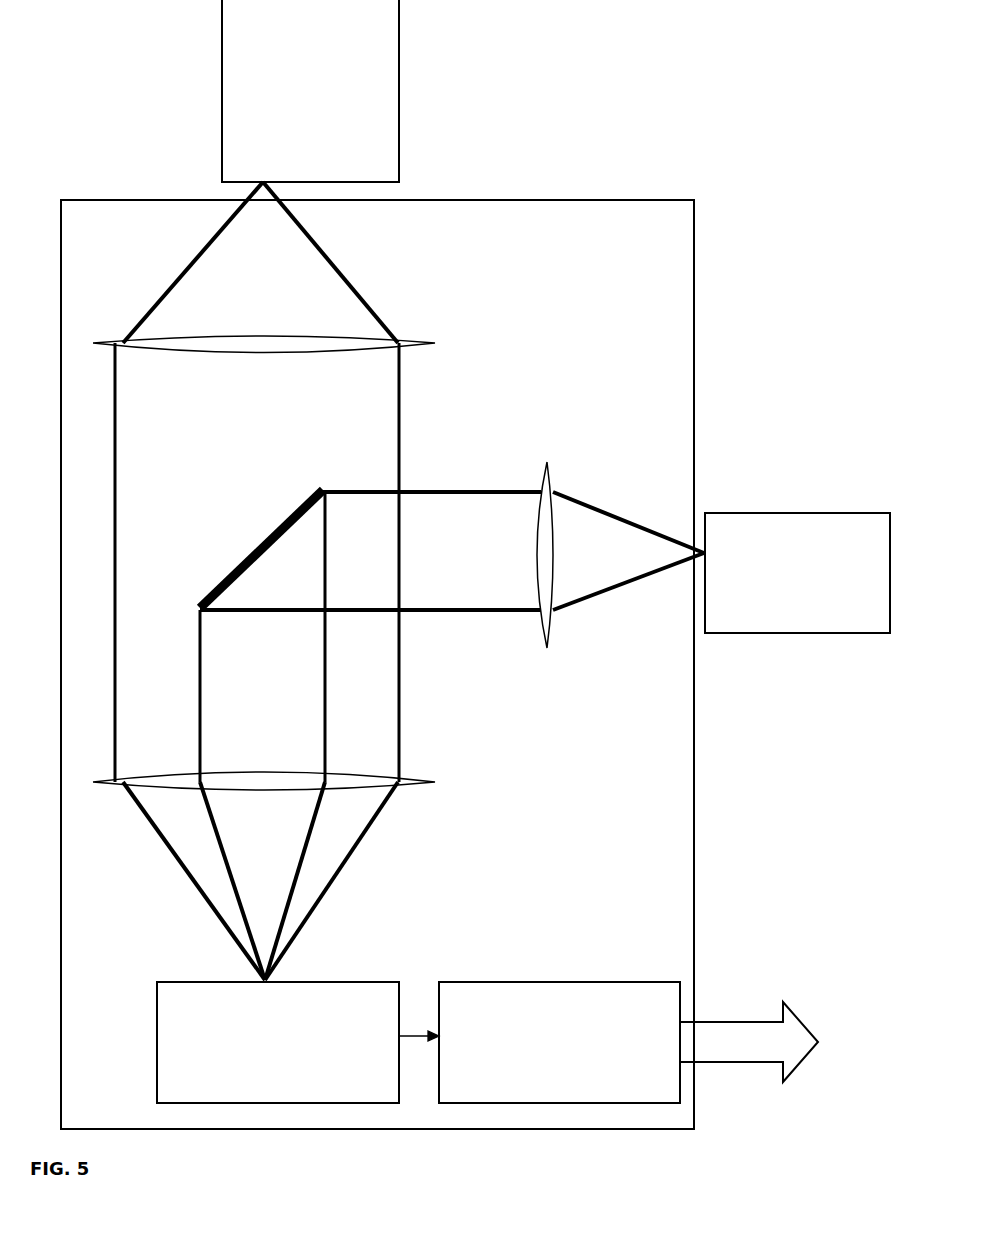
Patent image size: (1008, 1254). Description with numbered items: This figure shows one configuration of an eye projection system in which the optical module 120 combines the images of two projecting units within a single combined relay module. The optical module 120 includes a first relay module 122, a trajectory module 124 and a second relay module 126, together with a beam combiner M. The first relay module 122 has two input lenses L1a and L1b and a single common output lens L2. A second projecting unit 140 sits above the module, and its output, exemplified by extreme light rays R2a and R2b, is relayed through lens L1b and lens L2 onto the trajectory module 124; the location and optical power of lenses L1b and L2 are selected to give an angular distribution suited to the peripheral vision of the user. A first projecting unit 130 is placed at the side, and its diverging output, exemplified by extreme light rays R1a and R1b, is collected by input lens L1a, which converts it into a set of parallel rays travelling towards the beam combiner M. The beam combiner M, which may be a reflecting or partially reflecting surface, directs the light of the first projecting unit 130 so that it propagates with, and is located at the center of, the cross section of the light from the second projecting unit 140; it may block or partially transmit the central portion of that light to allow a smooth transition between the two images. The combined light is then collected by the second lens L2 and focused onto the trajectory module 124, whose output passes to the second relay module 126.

The optical module 120 is at (439, 655).
The first relay module 122 is at (448, 460).
The trajectory module 124 is at (278, 1042).
The second relay module 126 is at (559, 1042).
The first projecting unit 130 is at (797, 573).
The second projecting unit 140 is at (310, 91).
The beam combiner M is at (248, 553).
The input lens L1a is at (543, 645).
The input lens L1b is at (430, 343).
The second lens L2 is at (418, 787).
The extreme light ray R1a is at (588, 502).
The extreme light ray R1b is at (607, 595).
The extreme light ray R2a is at (336, 263).
The extreme light ray R2b is at (158, 302).